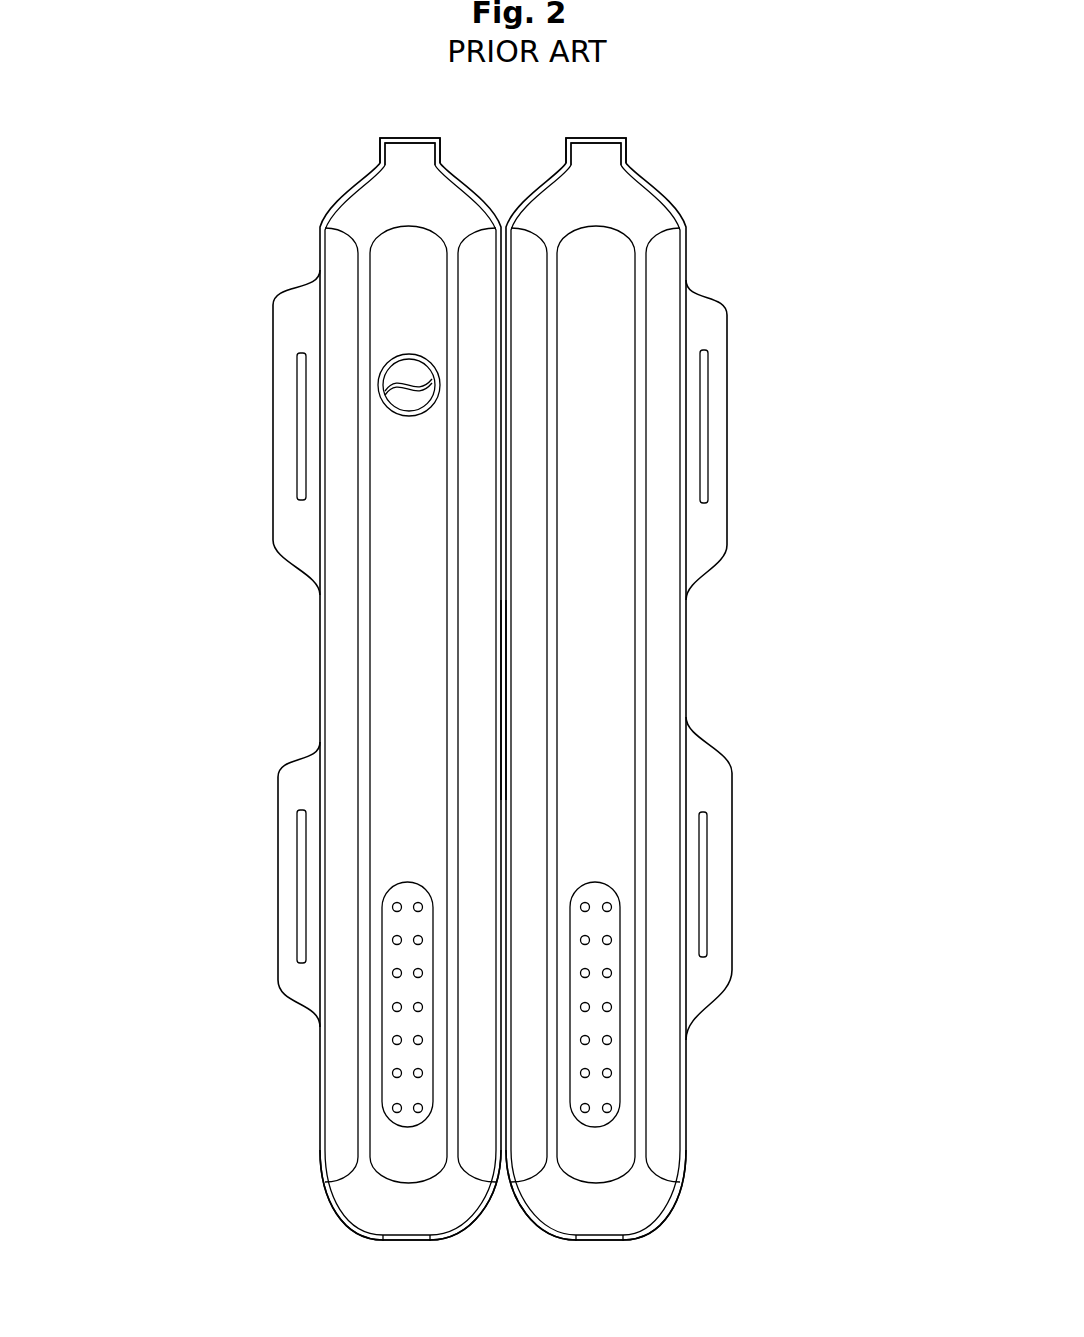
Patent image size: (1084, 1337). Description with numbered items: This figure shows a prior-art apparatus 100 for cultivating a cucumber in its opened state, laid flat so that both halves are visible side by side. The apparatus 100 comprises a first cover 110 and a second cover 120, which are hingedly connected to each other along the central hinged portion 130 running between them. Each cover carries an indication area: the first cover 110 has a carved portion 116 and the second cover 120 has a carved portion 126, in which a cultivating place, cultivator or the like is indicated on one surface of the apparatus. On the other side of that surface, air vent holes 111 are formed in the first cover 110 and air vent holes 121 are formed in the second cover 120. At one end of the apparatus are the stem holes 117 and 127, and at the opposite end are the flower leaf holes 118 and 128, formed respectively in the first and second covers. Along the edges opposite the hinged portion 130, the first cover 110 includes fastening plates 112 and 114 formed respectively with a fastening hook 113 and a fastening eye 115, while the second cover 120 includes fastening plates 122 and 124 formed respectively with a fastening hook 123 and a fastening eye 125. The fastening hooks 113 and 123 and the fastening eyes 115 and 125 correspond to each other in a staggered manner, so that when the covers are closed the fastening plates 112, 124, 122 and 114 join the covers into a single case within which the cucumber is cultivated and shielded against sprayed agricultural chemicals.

The apparatus for cultivating a cucumber 100 is at (748, 188).
The first cover 110 is at (322, 622).
The air vent holes 111 is at (396, 1042).
The fastening plate 112 is at (287, 523).
The fastening hook 113 is at (293, 422).
The fastening plate 114 is at (288, 978).
The fastening eye 115 is at (297, 889).
The carved portion 116 is at (381, 372).
The stem hole 117 is at (400, 150).
The flower leaf hole 118 is at (393, 1240).
The second cover 120 is at (672, 663).
The air vent holes 121 is at (608, 1042).
The fastening plate 122 is at (710, 997).
The fastening hook 123 is at (712, 882).
The fastening plate 124 is at (713, 521).
The fastening eye 125 is at (709, 428).
The carved portion 126 is at (627, 340).
The stem hole 127 is at (603, 150).
The flower leaf hole 128 is at (603, 1240).
The hinged portion 130 is at (500, 712).